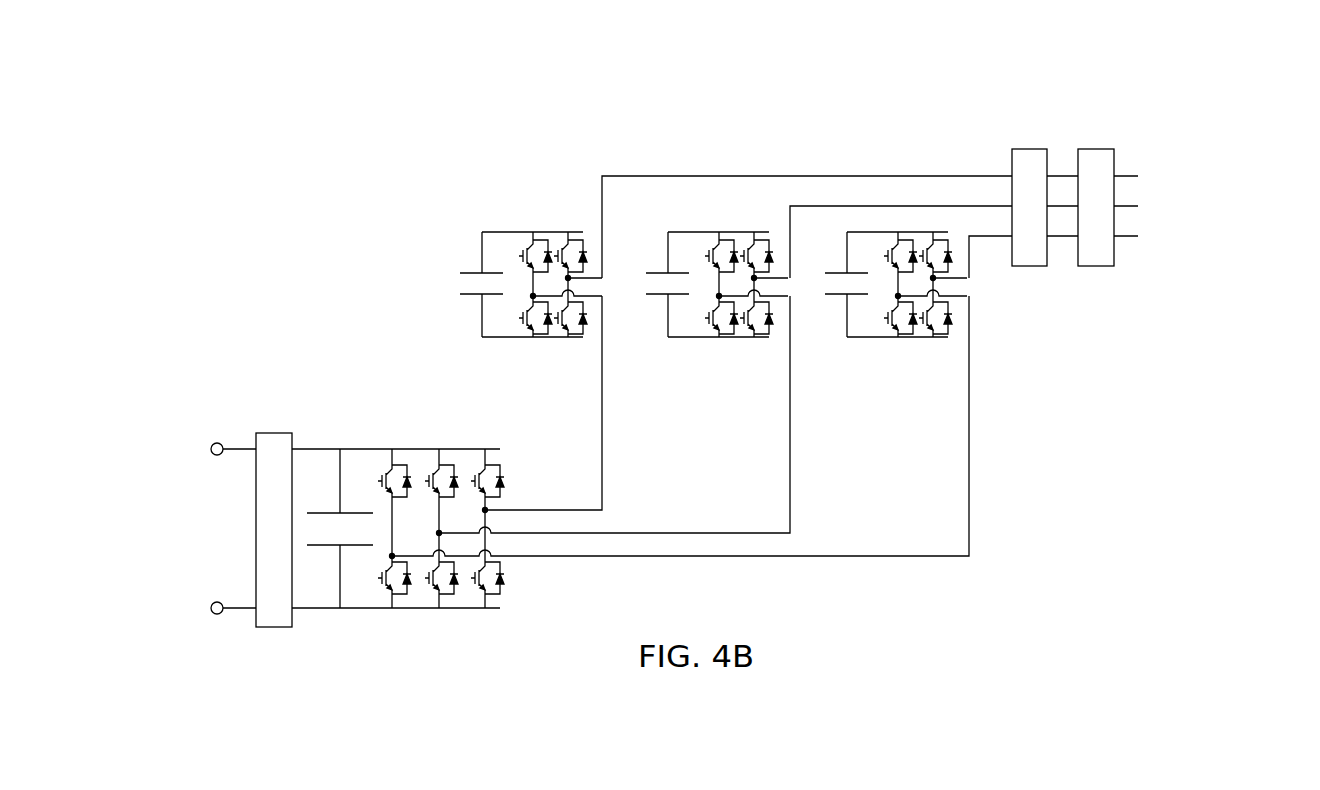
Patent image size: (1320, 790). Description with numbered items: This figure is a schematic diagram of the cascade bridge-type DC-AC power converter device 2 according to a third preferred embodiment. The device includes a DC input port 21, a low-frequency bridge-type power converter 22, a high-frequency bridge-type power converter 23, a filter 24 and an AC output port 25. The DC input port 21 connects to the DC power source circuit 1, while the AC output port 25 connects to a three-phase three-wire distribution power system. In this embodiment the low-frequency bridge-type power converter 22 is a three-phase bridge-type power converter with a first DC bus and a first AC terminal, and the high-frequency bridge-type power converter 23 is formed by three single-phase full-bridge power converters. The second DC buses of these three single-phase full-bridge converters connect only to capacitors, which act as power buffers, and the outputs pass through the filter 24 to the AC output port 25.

The DC power source circuit 1 is at (180, 480).
The cascade bridge-type DC-AC power converter device 2 is at (849, 156).
The DC input port 21 is at (274, 433).
The low-frequency bridge-type power converter 22 is at (418, 450).
The high-frequency bridge-type power converter 23 is at (516, 232).
The filter 24 is at (1028, 149).
The AC output port 25 is at (1094, 149).